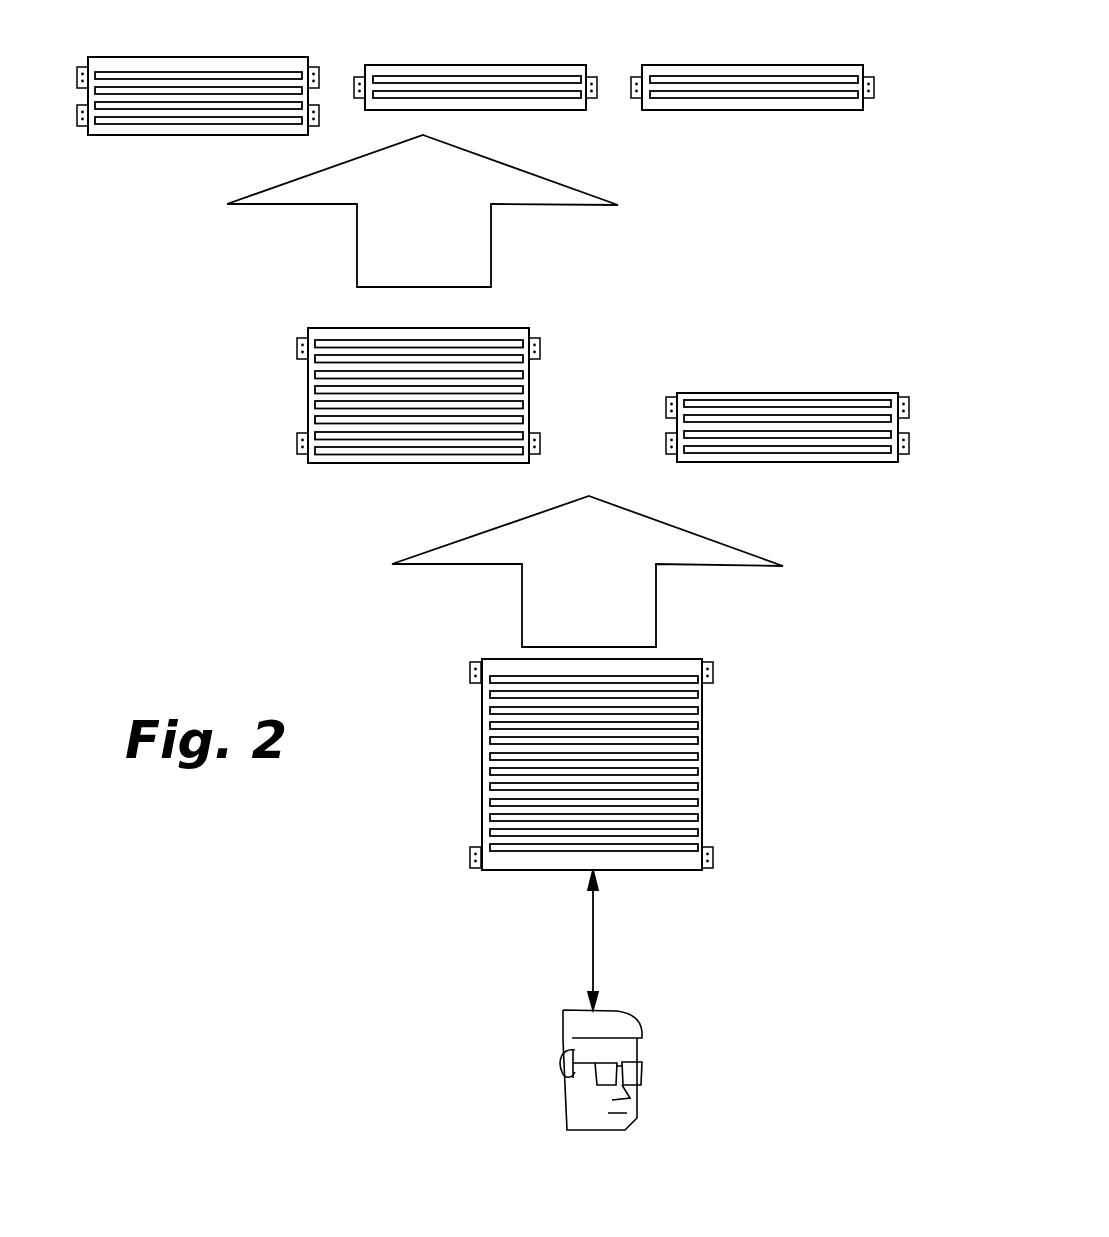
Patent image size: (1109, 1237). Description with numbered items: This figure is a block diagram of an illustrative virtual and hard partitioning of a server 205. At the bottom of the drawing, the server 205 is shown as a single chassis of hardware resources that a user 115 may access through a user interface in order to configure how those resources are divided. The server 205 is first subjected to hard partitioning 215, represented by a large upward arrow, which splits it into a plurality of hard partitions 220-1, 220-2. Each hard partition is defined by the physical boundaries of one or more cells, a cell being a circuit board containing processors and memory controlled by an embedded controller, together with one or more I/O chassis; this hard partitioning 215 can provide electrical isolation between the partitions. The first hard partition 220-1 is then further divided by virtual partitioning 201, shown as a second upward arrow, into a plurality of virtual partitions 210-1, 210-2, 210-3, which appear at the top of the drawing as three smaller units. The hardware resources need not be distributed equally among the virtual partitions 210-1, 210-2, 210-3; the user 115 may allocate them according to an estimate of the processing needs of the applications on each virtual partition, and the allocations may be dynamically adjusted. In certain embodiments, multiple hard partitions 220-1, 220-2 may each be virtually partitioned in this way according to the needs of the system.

The virtual partition 210-1 is at (205, 56).
The virtual partition 210-2 is at (522, 64).
The virtual partition 210-3 is at (790, 64).
The virtual partitioning 201 is at (452, 282).
The first hard partition 220-1 is at (501, 328).
The hard partition 220-2 is at (849, 393).
The hard partitioning 215 is at (608, 639).
The server 205 is at (688, 658).
The user 115 is at (623, 1012).